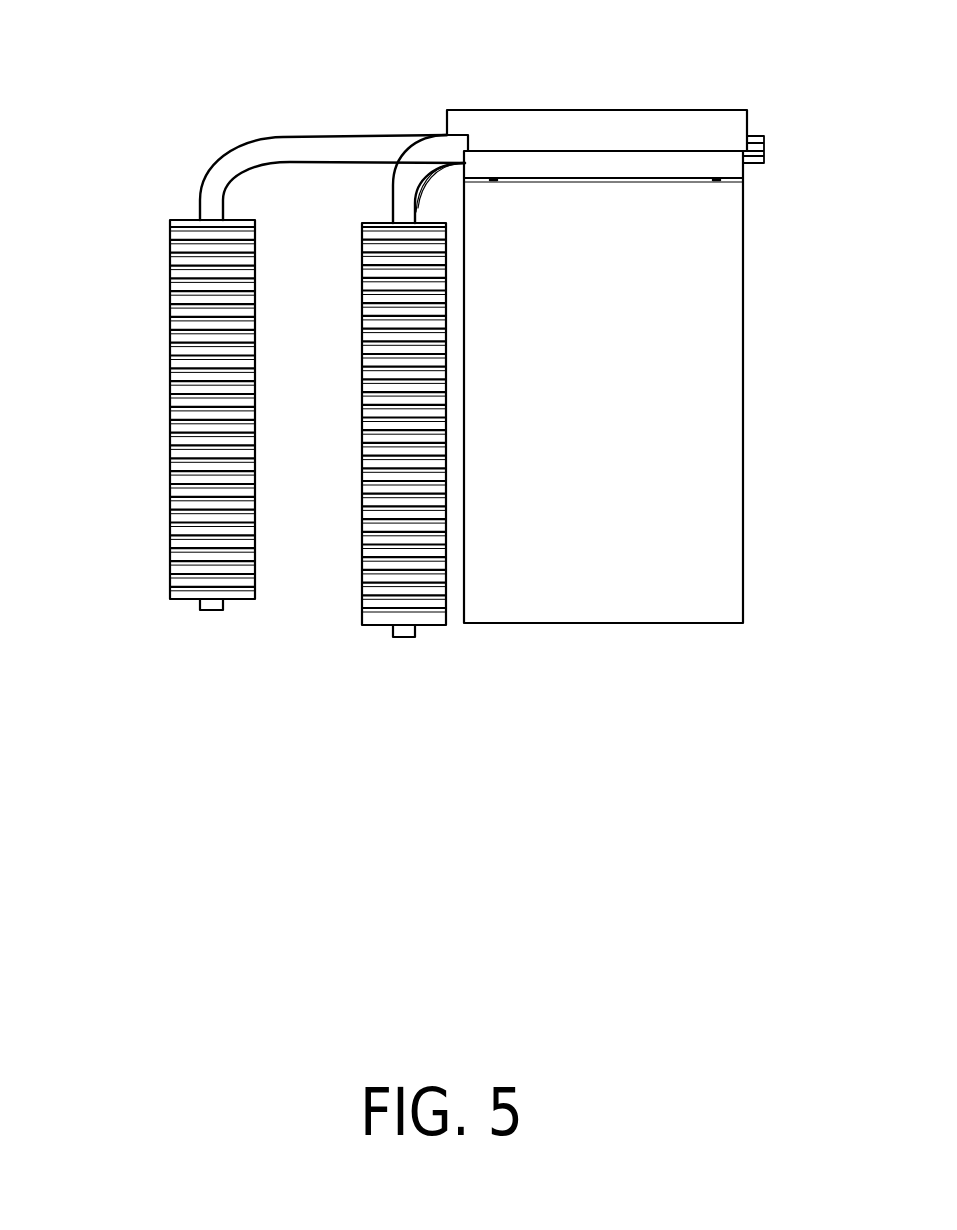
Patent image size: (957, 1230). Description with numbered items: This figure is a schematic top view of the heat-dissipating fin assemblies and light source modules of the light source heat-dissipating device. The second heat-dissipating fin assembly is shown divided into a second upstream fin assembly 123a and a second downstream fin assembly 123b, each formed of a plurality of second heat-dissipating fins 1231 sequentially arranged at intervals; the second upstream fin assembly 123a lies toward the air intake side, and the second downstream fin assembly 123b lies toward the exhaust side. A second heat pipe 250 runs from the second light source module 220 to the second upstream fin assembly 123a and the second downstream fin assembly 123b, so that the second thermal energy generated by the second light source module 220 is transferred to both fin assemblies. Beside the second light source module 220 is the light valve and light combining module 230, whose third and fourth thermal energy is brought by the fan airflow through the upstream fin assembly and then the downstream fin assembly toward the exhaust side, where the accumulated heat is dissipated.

The second heat pipe 250 is at (285, 160).
The second downstream fin assembly 123b is at (182, 218).
The second upstream fin assembly 123a is at (373, 222).
The second light source module 220 is at (527, 135).
The light valve and light combining module 230 is at (648, 212).
The second heat-dissipating fin 1231 is at (168, 586).